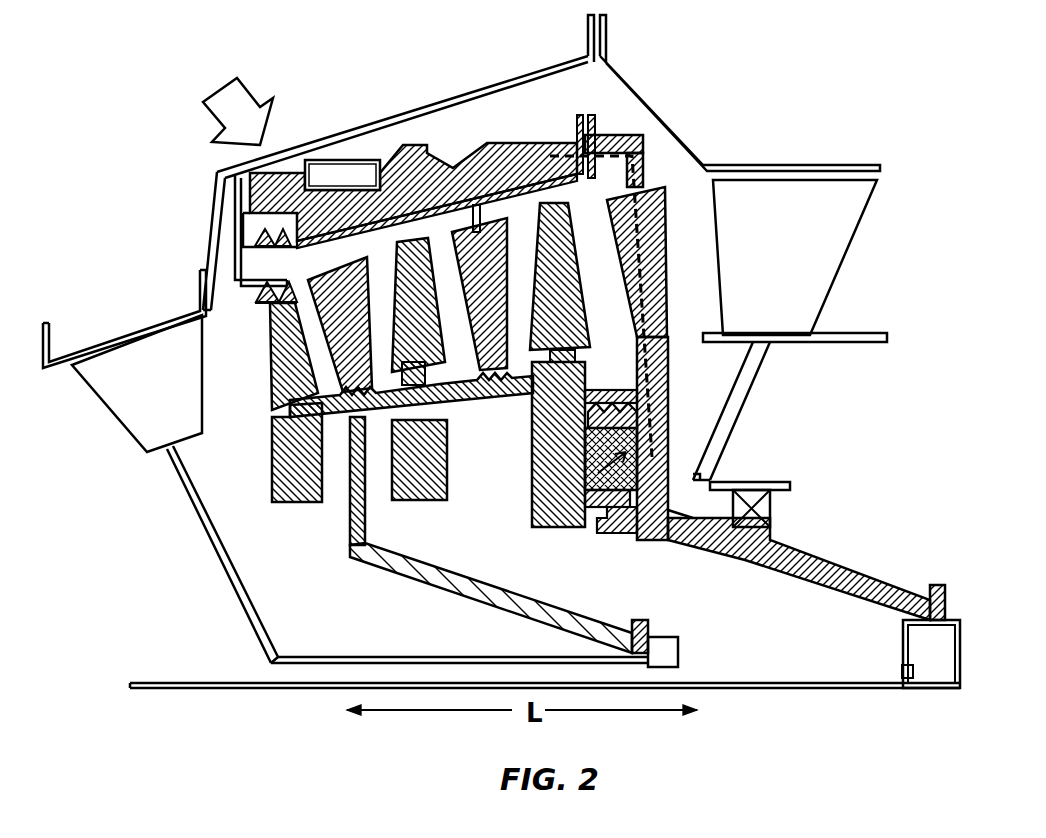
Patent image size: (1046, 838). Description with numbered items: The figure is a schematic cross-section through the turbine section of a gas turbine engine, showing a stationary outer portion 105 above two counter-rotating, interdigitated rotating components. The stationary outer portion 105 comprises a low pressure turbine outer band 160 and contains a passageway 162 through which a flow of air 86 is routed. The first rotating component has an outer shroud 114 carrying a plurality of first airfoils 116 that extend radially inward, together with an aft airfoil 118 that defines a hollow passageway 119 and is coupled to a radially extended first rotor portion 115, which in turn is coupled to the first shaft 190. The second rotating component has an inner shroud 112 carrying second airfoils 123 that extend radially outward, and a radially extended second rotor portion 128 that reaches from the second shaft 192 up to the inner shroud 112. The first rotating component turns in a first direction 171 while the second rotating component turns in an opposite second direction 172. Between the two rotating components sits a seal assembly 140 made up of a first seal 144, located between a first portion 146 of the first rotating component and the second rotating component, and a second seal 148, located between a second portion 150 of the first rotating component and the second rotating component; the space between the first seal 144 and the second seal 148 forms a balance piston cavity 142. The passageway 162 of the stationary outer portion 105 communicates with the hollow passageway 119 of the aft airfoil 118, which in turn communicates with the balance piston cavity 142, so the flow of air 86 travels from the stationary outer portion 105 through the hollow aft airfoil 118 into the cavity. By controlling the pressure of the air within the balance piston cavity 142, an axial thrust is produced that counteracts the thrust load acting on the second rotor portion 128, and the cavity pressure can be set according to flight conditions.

The flow of air 86 is at (213, 106).
The stationary outer portion 105 is at (461, 191).
The low pressure turbine outer band 160 is at (323, 138).
The passageway 162 is at (430, 192).
The outer shroud 114 is at (527, 187).
The second airfoils 123 is at (280, 365).
The first airfoils 116 is at (503, 336).
The aft airfoil 118 is at (650, 193).
The hollow passageway 119 is at (640, 257).
The inner shroud 112 is at (490, 403).
The balance piston cavity 142 is at (560, 527).
The first seal 144 is at (610, 403).
The seal assembly 140 is at (699, 417).
The first portion 146 is at (676, 388).
The second seal 148 is at (635, 520).
The second portion 150 is at (673, 507).
The first rotor portion 115 is at (822, 562).
The second rotor portion 128 is at (468, 588).
The second shaft 192 is at (442, 660).
The first shaft 190 is at (778, 688).
The first direction 171 is at (207, 706).
The second direction 172 is at (250, 658).